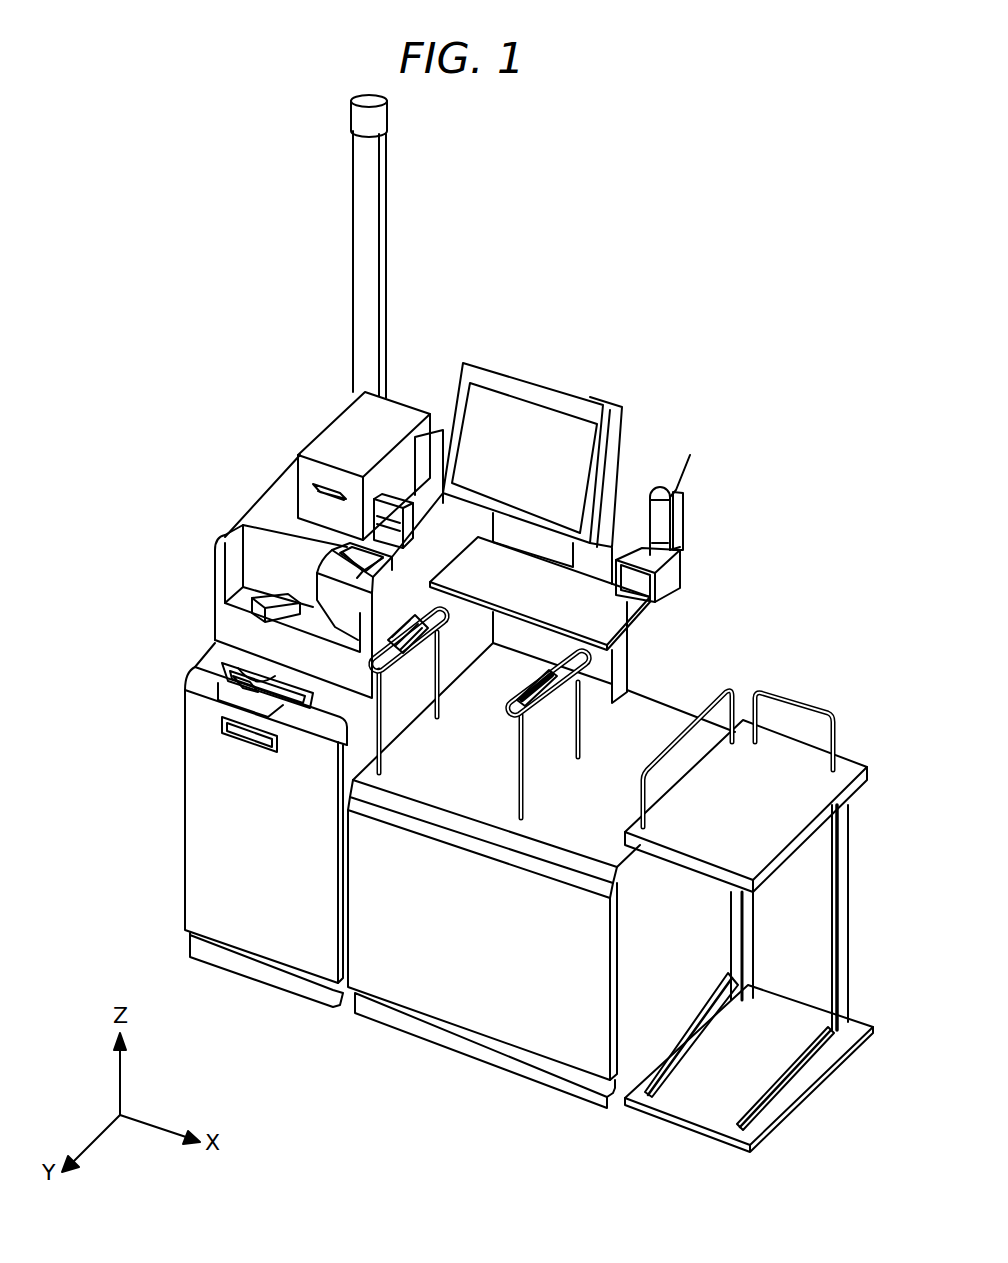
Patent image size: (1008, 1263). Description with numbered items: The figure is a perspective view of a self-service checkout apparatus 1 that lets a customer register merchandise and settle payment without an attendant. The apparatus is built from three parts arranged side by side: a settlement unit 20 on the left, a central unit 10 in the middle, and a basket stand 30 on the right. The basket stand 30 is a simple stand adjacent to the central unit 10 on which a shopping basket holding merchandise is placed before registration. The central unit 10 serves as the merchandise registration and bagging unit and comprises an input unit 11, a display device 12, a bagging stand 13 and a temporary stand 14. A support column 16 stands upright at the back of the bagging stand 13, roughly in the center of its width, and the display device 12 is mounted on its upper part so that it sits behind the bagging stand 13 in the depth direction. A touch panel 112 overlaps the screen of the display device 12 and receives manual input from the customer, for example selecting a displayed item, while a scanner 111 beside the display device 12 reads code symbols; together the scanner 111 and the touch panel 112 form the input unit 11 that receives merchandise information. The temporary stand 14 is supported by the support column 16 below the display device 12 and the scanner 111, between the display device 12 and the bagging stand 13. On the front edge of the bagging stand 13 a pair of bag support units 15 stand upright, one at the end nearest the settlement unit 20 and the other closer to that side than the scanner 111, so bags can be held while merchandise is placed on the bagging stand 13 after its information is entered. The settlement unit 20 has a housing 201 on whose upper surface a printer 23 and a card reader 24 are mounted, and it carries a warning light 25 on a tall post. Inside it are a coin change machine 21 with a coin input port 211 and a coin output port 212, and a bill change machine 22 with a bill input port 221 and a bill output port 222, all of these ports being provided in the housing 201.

The self-service checkout apparatus 1 is at (640, 298).
The central unit 10 is at (522, 363).
The input unit 11 is at (768, 457).
The display device 12 is at (557, 428).
The bagging stand 13 is at (457, 788).
The temporary stand 14 is at (560, 595).
The bag support units 15 is at (385, 735).
The support column 16 is at (608, 668).
The settlement unit 20 is at (417, 388).
The coin change machine 21 is at (215, 588).
The bill change machine 22 is at (333, 698).
The printer 23 is at (341, 431).
The card reader 24 is at (422, 492).
The warning light 25 is at (350, 103).
The basket stand 30 is at (863, 768).
The scanner 111 is at (680, 558).
The touch panel 112 is at (565, 447).
The housing 201 is at (280, 478).
The coin input port 211 is at (347, 547).
The coin output port 212 is at (277, 607).
The bill input port 221 is at (237, 693).
The bill output port 222 is at (243, 662).